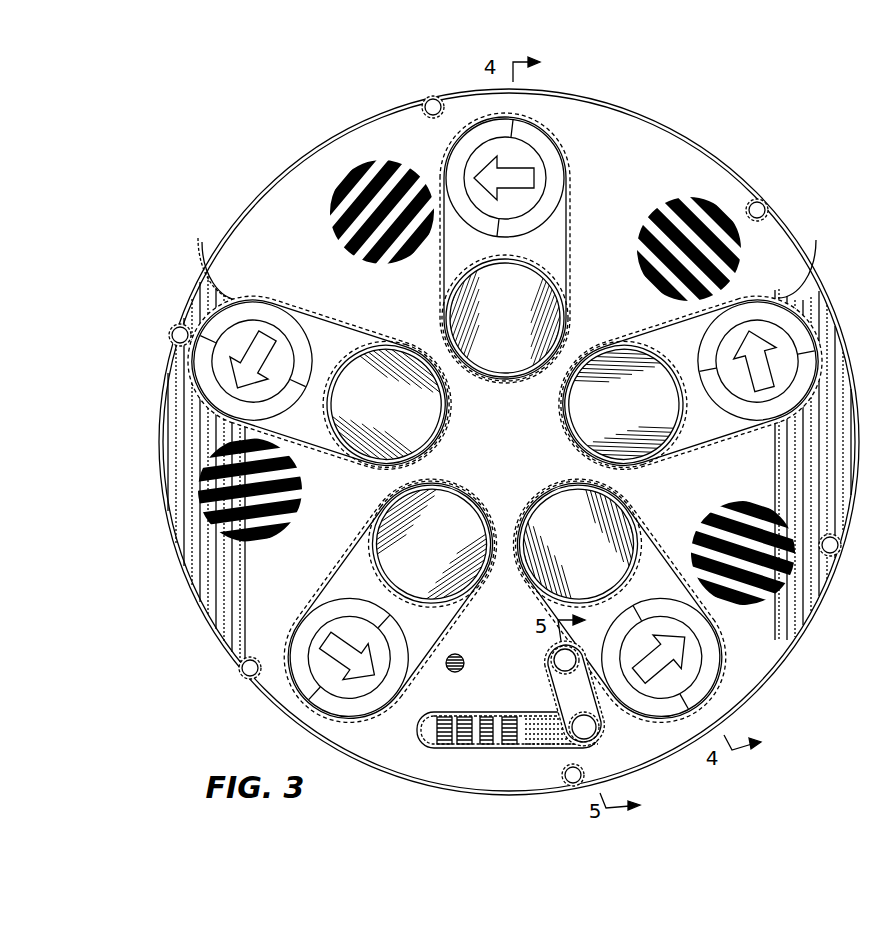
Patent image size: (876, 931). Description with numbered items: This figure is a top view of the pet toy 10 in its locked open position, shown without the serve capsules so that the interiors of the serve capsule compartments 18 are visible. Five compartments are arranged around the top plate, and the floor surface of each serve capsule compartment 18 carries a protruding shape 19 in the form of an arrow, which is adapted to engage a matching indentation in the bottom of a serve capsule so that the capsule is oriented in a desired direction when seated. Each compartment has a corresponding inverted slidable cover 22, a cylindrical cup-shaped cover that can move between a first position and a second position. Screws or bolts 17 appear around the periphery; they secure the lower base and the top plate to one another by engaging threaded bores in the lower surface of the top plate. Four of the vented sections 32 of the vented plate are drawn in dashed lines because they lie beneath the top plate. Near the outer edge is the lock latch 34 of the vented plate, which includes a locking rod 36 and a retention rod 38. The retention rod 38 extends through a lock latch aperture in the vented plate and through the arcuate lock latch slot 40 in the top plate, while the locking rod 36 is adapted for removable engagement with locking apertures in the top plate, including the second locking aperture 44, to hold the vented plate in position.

The pet toy 10 is at (262, 140).
The screws or bolts 17 is at (431, 97).
The serve capsule compartment 18 is at (243, 298).
The protruding shape 19 is at (527, 172).
The inverted slidable cover 22 is at (493, 330).
The vented sections 32 is at (343, 188).
The lock latch 34 is at (562, 684).
The locking rod 36 is at (552, 668).
The retention rod 38 is at (594, 733).
The lock latch slot 40 is at (452, 746).
The second locking aperture 44 is at (464, 661).